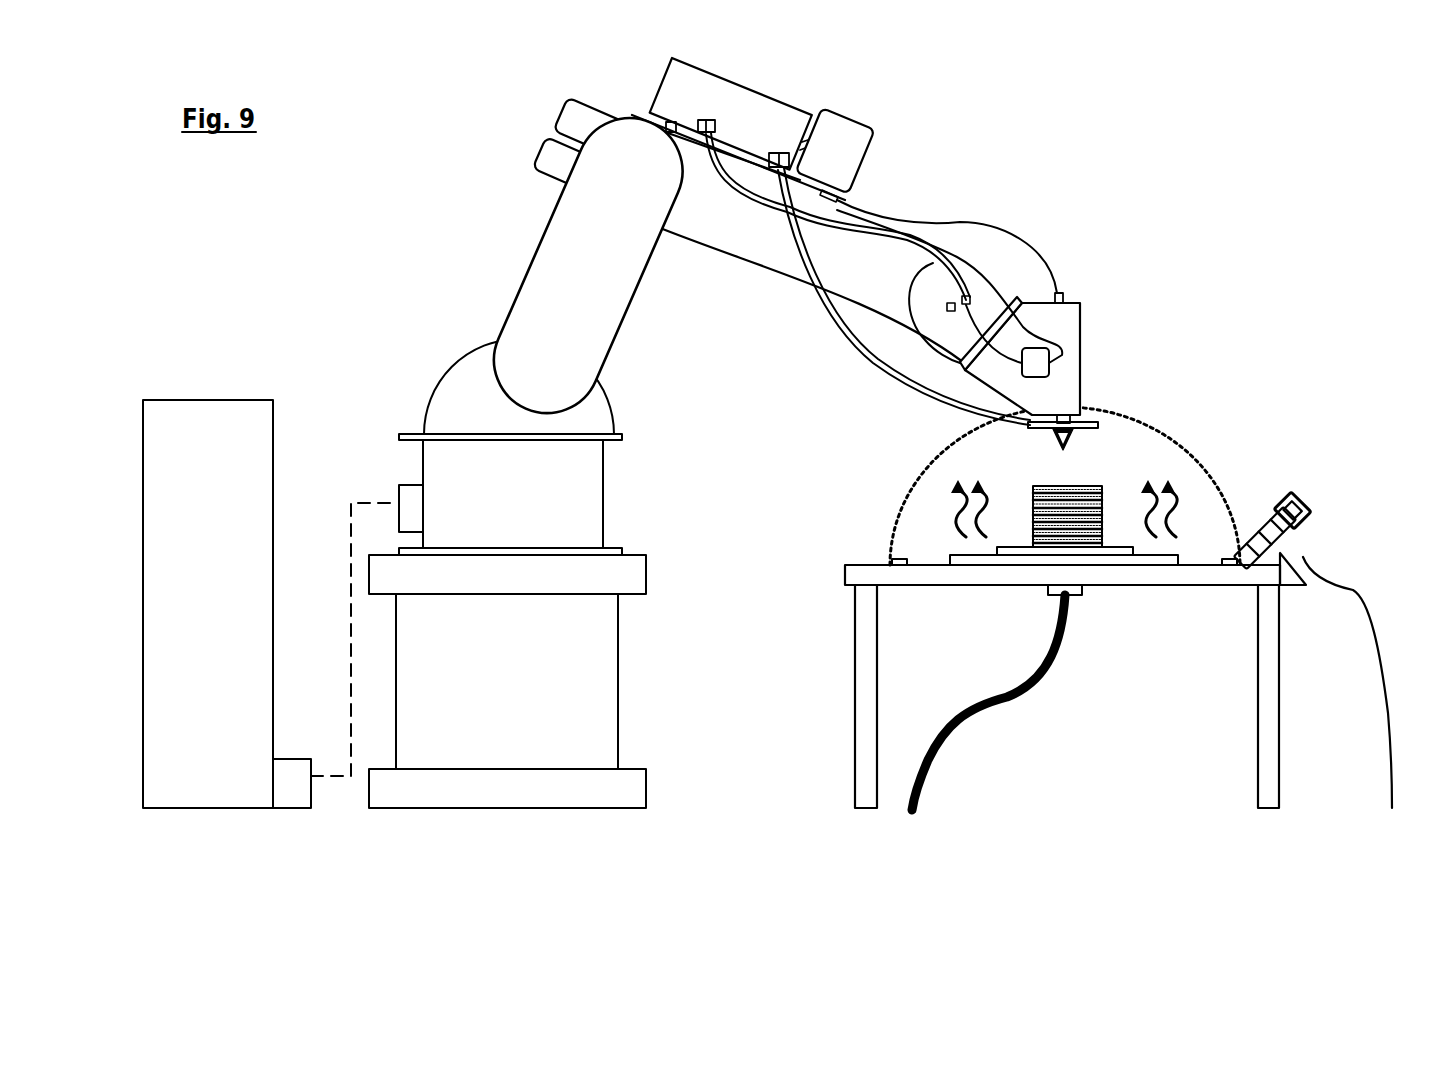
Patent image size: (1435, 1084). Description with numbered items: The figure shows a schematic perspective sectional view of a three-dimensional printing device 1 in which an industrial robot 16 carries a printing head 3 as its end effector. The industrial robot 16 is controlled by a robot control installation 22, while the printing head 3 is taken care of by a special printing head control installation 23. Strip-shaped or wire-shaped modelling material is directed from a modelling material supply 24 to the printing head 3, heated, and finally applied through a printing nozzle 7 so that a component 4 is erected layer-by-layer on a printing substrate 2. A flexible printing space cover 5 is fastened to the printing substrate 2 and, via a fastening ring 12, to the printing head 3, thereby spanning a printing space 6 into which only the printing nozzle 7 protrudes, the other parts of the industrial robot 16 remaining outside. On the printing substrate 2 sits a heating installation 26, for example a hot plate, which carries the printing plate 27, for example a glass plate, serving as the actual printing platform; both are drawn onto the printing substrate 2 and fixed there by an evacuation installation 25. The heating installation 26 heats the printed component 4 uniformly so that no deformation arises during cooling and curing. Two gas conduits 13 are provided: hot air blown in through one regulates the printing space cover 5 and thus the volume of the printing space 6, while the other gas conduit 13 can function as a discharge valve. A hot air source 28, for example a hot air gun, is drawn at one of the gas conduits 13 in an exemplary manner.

The 3D printing device 1 is at (1134, 150).
The printing substrate 2 is at (1197, 548).
The printing head 3 is at (1087, 322).
The component 4 is at (1041, 486).
The flexible printing space cover 5 is at (1190, 452).
The printing space 6 is at (1145, 432).
The printing nozzle 7 is at (1074, 441).
The fastening ring 12 is at (1088, 422).
The gas conduit 13 is at (900, 560).
The industrial robot 16 is at (550, 251).
The robot control installation 22 is at (260, 398).
The printing head control installation 23 is at (776, 114).
The modelling material supply 24 is at (853, 127).
The evacuation installation 25 is at (1058, 652).
The heating installation 26 is at (1157, 568).
The printing plate 27 is at (1027, 547).
The camera sensor 28 is at (1302, 520).